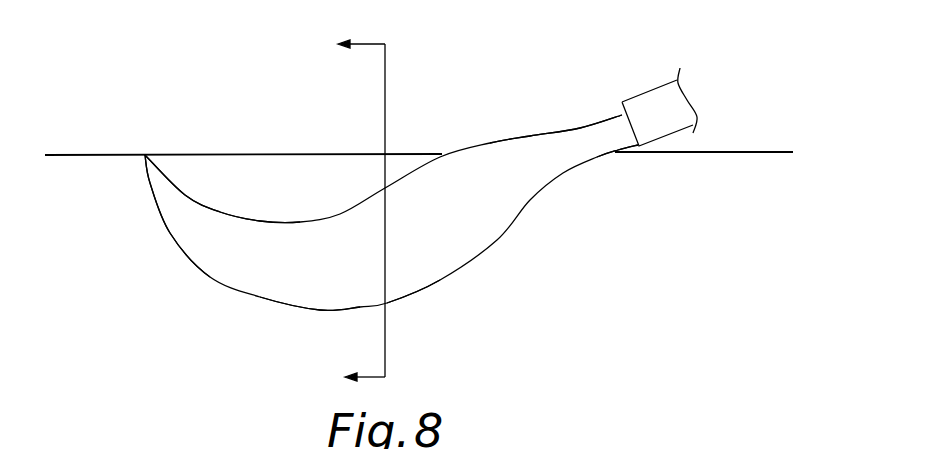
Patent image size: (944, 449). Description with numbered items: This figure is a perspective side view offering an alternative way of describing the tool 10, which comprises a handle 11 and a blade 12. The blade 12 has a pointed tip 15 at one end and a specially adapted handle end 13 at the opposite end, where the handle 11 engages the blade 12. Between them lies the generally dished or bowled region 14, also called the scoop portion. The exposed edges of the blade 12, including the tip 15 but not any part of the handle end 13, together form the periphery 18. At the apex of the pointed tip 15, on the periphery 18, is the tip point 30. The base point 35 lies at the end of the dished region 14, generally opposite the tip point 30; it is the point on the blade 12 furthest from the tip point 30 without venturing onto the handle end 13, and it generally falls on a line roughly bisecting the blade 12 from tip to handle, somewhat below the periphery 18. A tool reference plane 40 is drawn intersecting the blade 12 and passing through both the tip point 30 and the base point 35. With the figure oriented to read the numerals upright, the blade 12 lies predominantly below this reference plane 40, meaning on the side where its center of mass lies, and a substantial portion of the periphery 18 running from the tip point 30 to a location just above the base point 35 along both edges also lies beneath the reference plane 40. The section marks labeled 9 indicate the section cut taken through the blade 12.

The section line 9- 9 is at (353, 211).
The tool 10 is at (503, 280).
The handle 11 is at (677, 82).
The blade 12 is at (403, 310).
The handle end 13 is at (595, 118).
The dished region 14 is at (345, 310).
The pointed tip 15 is at (202, 248).
The periphery 18 is at (222, 213).
The tip point 30 is at (146, 155).
The base point 35 is at (613, 152).
The tool reference plane 40 is at (275, 153).